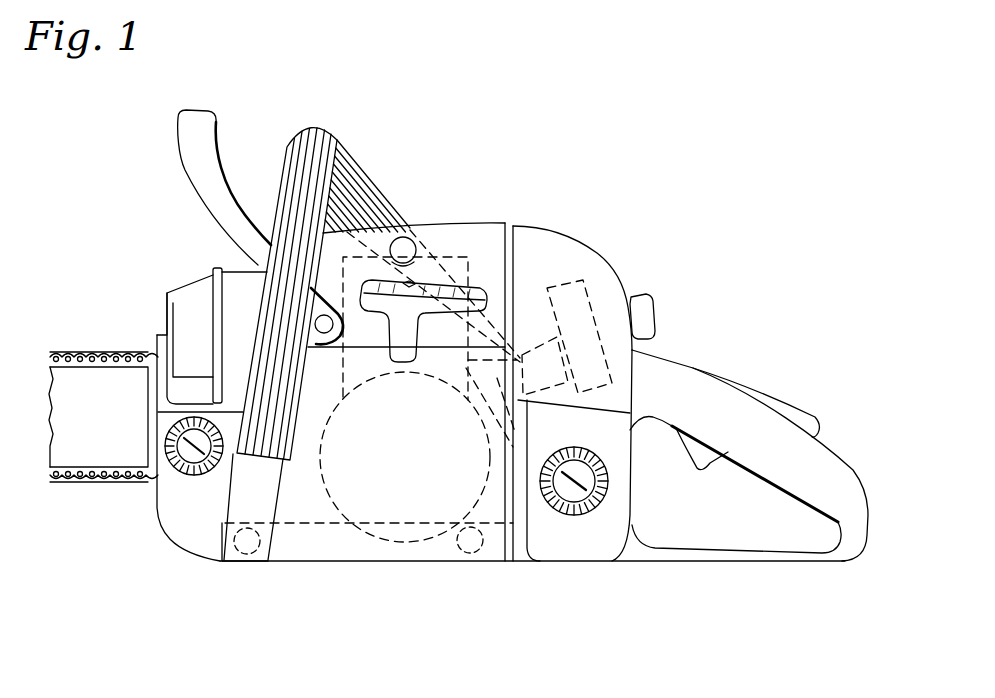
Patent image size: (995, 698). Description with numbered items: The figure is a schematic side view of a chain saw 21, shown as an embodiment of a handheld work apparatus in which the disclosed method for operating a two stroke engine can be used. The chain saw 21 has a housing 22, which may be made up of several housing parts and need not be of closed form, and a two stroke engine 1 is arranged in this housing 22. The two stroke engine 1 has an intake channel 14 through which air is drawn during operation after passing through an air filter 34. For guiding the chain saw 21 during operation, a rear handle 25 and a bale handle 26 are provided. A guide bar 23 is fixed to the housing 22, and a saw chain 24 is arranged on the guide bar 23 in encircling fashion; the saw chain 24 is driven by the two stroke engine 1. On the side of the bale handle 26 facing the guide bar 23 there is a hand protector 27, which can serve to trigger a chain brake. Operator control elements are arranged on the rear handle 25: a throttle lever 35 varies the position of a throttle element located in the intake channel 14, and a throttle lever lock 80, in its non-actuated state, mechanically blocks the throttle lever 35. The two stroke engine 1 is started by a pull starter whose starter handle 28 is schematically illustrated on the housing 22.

The two stroke engine 1 is at (453, 257).
The intake channel 14 is at (522, 415).
The chain saw 21 is at (708, 144).
The housing 22 is at (302, 500).
The guide bar 23 is at (83, 397).
The saw chain 24 is at (110, 357).
The rear handle 25 is at (747, 417).
The bale handle 26 is at (347, 183).
The hand protector 27 is at (197, 153).
The starter handle 28 is at (488, 296).
The air filter 34 is at (587, 305).
The throttle lever 35 is at (705, 457).
The throttle lever lock 80 is at (800, 418).